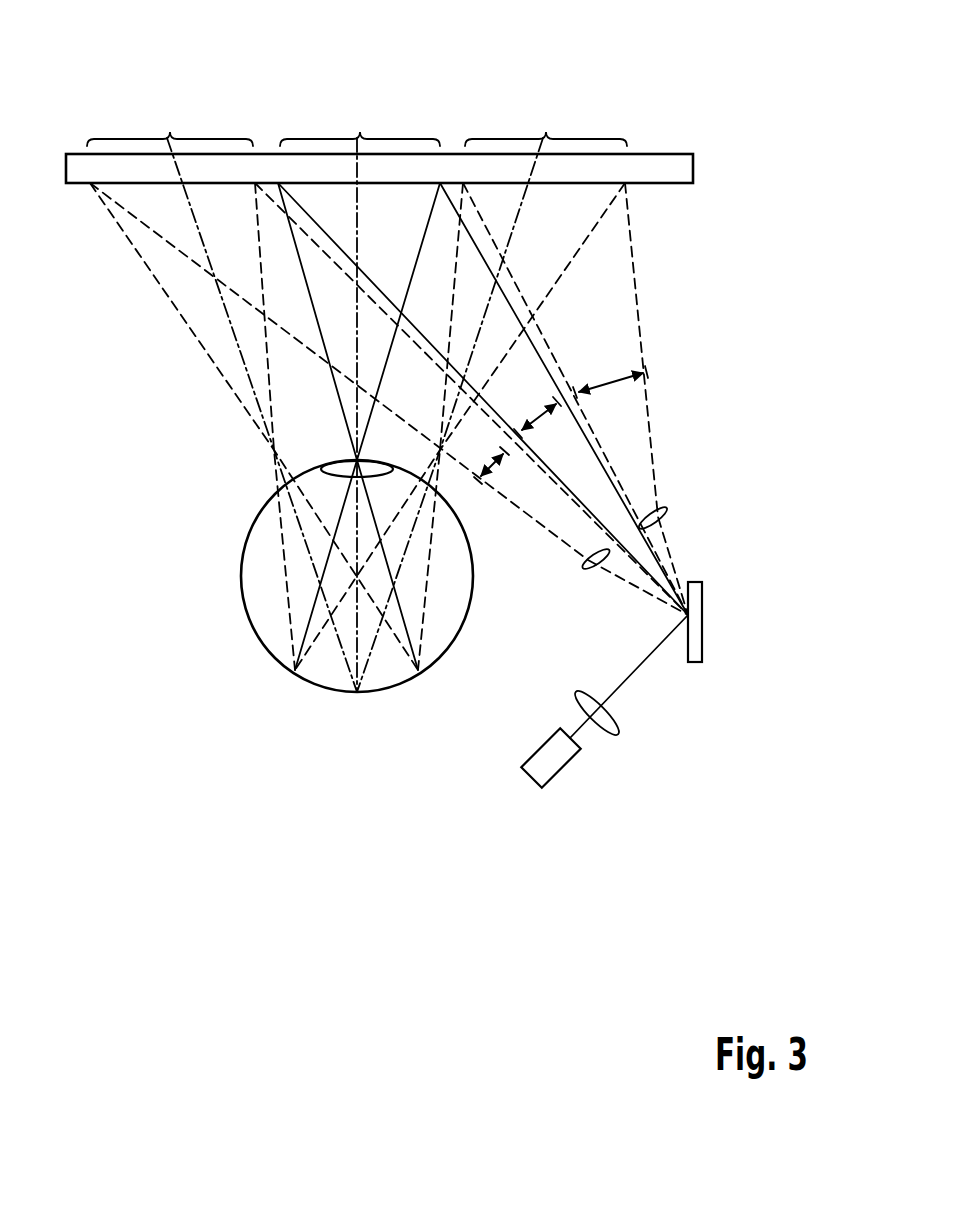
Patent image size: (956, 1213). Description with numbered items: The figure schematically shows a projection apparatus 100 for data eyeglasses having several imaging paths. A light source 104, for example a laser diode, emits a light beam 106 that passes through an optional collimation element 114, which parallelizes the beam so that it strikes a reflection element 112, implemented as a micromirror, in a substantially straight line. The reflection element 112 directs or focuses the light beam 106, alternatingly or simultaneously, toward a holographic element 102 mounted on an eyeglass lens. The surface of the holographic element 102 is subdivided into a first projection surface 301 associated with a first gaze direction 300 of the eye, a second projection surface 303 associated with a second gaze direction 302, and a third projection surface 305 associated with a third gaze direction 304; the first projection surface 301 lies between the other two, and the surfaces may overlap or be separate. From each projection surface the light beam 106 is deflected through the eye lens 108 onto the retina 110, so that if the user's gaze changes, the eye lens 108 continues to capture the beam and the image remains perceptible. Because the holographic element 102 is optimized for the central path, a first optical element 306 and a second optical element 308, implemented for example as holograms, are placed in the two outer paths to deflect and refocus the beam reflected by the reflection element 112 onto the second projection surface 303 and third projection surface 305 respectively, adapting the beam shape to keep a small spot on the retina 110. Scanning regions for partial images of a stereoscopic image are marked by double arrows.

The projection apparatus 100 is at (180, 86).
The holographic element 102 is at (694, 168).
The light source 104 is at (558, 772).
The light beam 106 is at (208, 360).
The eye lens 108 is at (338, 465).
The retina 110 is at (433, 695).
The reflection element 112 is at (702, 626).
The collimation element 114 is at (612, 733).
The first gaze direction 300 is at (360, 206).
The first projection surface 301 is at (359, 384).
The second gaze direction 302 is at (188, 200).
The second projection surface 303 is at (252, 384).
The third gaze direction 304 is at (521, 211).
The third projection surface 305 is at (461, 384).
The first optical element 306 is at (585, 568).
The second optical element 308 is at (665, 511).